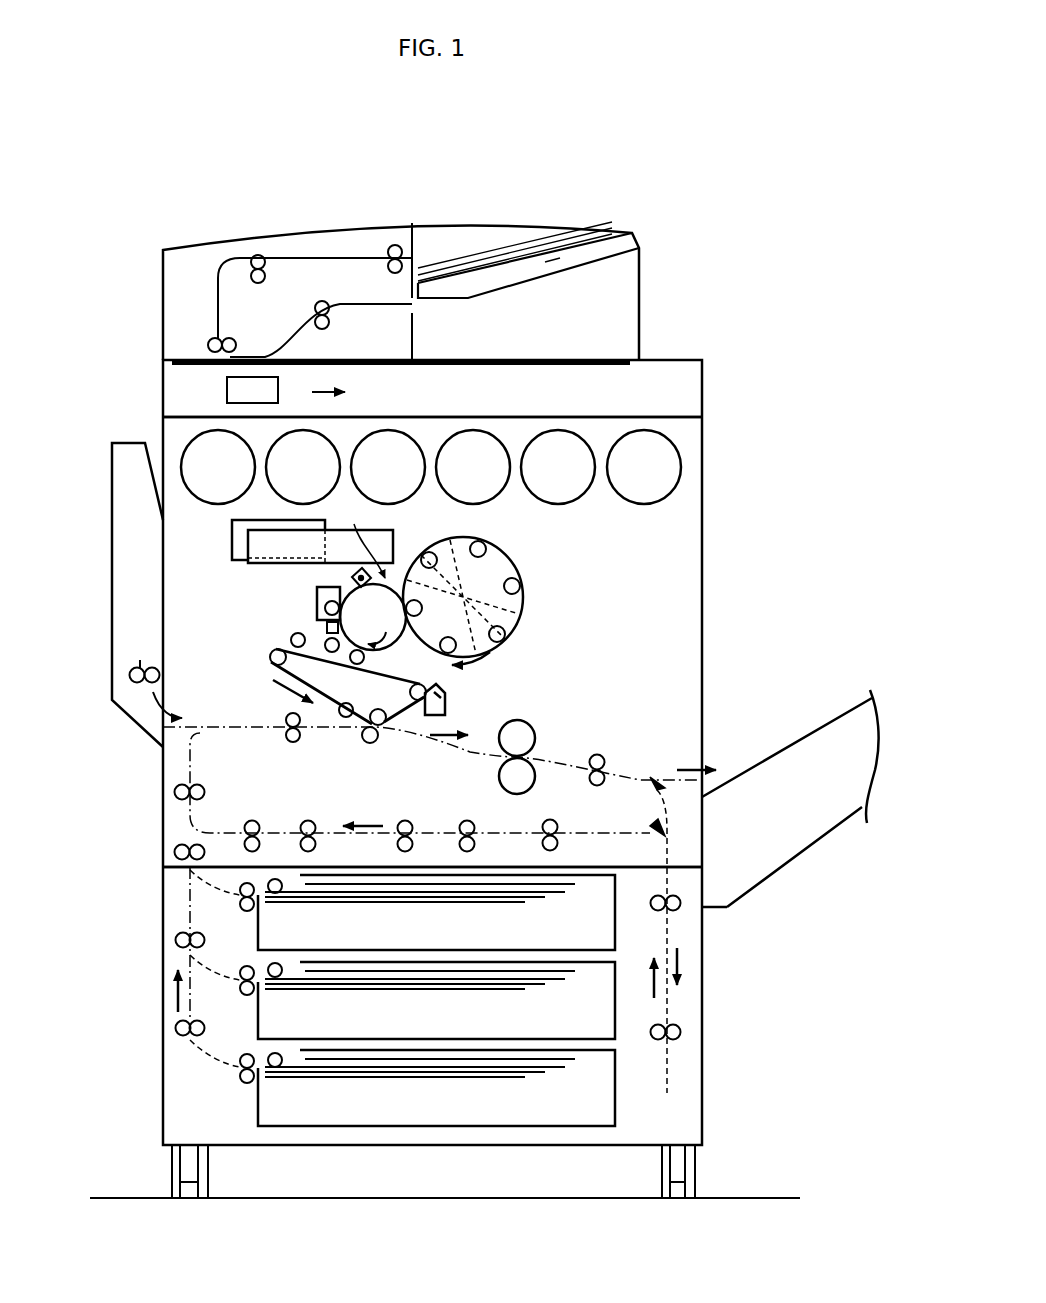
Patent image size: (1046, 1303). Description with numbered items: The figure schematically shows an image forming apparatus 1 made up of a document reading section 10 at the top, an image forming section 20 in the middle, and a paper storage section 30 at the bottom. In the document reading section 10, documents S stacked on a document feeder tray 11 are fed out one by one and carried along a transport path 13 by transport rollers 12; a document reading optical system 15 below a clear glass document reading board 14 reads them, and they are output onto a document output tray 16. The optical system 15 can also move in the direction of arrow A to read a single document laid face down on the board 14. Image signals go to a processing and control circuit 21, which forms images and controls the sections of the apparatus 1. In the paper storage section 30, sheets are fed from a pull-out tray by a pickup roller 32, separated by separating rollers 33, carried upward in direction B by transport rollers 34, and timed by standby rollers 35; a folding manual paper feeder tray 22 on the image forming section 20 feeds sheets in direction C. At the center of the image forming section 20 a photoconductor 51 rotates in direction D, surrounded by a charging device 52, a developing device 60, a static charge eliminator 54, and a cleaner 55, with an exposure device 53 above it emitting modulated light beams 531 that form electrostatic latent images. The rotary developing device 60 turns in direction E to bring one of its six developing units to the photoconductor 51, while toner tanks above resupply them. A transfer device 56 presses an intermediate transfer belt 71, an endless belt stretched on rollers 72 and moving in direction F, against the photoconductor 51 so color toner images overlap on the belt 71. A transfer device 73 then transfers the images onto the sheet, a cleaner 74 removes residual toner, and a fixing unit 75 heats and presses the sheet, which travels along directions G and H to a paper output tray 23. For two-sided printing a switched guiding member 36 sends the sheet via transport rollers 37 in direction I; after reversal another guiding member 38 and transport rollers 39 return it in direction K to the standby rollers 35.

The image forming apparatus 1 is at (748, 156).
The document reading section 10 is at (675, 289).
The document feeder tray 11 is at (522, 262).
The transport rollers 12 is at (261, 255).
The transport path 13 is at (218, 300).
The document reading board 14 is at (612, 360).
The document reading optical system 15 is at (227, 390).
The document output tray 16 is at (553, 268).
The documents S is at (480, 253).
The image forming section 20 is at (722, 567).
The processing and control circuit 21 is at (232, 528).
The manual paper feeder tray 22 is at (112, 520).
The paper output tray 23 is at (825, 722).
The paper storage section 30 is at (733, 1003).
The pickup roller 32 is at (274, 883).
The separating rollers 33 is at (240, 890).
The transport rollers 34 is at (187, 786).
The standby rollers 35 is at (292, 736).
The guiding member 36 is at (658, 776).
The transport rollers 37 is at (670, 908).
The guiding member 38 is at (670, 830).
The transport rollers 39 is at (473, 822).
The photoconductor 51 is at (393, 645).
The charging device 52 is at (353, 580).
The exposure device 53 is at (248, 552).
The light beams 531 is at (359, 538).
The static charge eliminator 54 is at (330, 628).
The cleaner 55 is at (318, 606).
The transfer device 56 is at (347, 703).
The developing device 60 is at (526, 612).
The intermediate transfer belt 71 is at (300, 686).
The rollers 72 is at (326, 643).
The transfer device 73 is at (373, 743).
The cleaner 74 is at (447, 706).
The fixing unit 75 is at (486, 774).